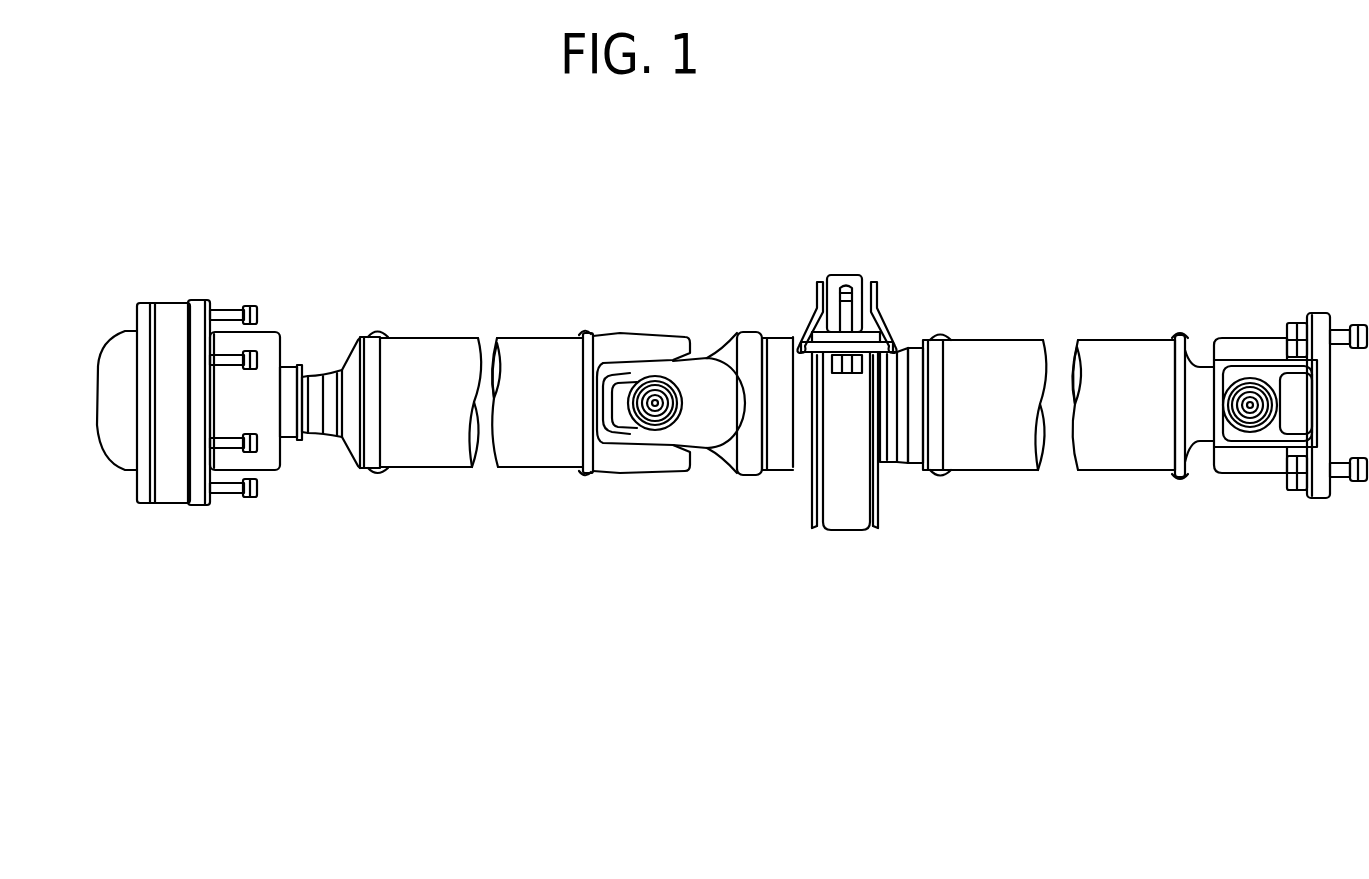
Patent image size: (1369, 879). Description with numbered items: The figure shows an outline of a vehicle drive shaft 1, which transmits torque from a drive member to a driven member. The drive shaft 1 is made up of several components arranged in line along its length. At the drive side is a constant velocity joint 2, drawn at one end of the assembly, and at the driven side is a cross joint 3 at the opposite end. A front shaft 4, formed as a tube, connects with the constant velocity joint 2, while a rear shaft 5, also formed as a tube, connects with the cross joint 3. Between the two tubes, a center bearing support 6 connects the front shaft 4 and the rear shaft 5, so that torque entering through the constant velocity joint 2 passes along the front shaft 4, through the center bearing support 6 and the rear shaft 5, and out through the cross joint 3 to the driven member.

The drive shaft 1 is at (1098, 283).
The constant velocity joint 2 is at (172, 308).
The cross joint 3 is at (1251, 348).
The front shaft 4 is at (428, 352).
The rear shaft 5 is at (980, 362).
The center bearing support 6 is at (846, 515).